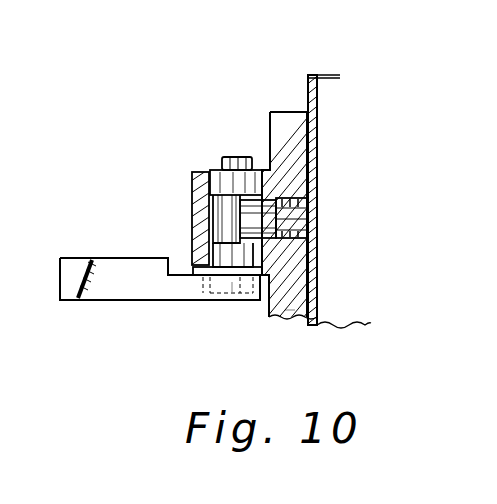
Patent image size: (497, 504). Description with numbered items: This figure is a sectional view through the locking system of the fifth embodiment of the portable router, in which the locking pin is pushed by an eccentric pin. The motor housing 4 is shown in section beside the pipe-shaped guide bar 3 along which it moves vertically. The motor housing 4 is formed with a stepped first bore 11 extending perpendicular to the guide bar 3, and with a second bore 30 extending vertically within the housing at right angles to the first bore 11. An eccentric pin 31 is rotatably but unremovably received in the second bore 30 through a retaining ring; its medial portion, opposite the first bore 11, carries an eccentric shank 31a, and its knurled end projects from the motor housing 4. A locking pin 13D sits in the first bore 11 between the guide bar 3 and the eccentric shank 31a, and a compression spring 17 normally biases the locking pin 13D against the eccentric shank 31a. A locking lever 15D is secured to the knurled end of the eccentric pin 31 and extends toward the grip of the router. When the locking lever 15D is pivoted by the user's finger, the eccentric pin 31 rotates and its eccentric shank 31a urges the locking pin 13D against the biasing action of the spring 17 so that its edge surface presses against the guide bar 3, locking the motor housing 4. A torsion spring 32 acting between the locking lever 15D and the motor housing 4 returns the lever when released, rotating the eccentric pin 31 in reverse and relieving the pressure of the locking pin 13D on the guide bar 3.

The guide bar 3 is at (317, 105).
The motor housing 4 is at (288, 122).
The first bore 11 is at (290, 318).
The locking pin 13D is at (310, 222).
The locking lever 15D is at (167, 288).
The compression spring 17 is at (308, 204).
The second bore 30 is at (215, 207).
The eccentric pin 31 is at (193, 182).
The eccentric shank 31a is at (218, 223).
The torsion spring 32 is at (232, 300).